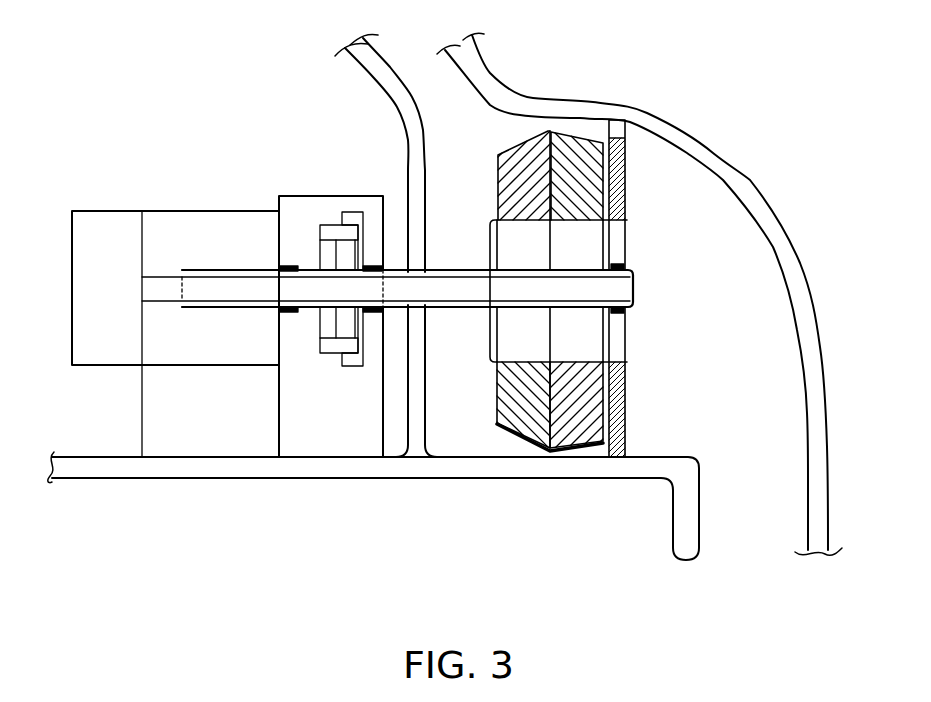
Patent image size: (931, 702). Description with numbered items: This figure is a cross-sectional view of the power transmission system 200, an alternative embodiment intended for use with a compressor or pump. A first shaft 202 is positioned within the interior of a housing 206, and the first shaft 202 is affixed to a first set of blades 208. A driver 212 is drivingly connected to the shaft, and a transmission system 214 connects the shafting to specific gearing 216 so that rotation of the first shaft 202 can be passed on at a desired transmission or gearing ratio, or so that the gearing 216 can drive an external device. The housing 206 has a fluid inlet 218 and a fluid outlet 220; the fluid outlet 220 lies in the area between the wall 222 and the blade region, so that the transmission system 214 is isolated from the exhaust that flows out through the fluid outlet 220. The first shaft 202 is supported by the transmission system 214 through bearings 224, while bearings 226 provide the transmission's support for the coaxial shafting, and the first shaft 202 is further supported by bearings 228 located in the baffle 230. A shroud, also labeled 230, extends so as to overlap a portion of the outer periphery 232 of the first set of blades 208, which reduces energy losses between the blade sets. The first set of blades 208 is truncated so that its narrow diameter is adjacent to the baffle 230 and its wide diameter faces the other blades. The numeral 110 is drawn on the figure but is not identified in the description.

The power transmission system 200 is at (656, 86).
The fluid outlet 220 is at (458, 110).
The fluid inlet 218 is at (755, 467).
The driver 212 is at (203, 222).
The transmission system 214 is at (307, 203).
The gearing 216 is at (325, 253).
The bearings 226 is at (375, 266).
The bearings 224 is at (291, 313).
The first shaft 202 is at (455, 309).
The wall 222 is at (418, 413).
The housing 206 is at (318, 479).
The outer periphery 232 is at (585, 137).
The magnet 110 is at (515, 433).
The first set of blades 208 is at (578, 445).
The baffle 230 is at (627, 177).
The bearings 228 is at (618, 268).